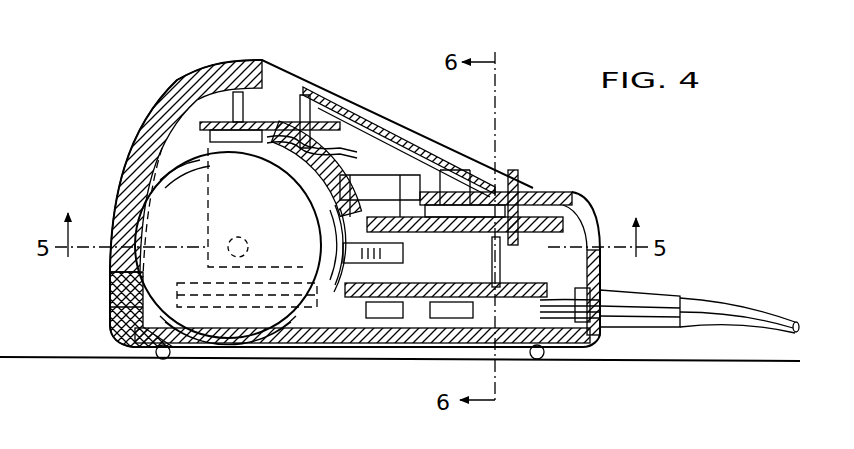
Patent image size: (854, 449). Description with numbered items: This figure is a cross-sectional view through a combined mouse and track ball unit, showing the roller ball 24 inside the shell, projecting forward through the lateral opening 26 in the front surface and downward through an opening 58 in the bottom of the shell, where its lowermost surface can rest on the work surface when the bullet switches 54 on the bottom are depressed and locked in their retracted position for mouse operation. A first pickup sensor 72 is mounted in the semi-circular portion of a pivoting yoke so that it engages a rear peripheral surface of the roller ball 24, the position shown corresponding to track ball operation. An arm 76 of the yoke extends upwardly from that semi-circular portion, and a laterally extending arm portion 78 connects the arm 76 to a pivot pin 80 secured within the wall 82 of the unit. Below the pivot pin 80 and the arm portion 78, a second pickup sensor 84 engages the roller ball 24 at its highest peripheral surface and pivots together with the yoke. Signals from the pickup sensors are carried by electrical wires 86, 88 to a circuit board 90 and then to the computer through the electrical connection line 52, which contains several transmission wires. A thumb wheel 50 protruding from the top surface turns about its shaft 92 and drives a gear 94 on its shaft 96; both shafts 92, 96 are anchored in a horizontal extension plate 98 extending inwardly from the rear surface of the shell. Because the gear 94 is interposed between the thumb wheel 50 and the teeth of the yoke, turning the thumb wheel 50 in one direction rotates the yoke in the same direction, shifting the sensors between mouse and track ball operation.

The roller ball 24 is at (269, 208).
The lateral opening 26 is at (110, 263).
The thumb wheel 50 is at (573, 200).
The electrical connection line 52 is at (750, 313).
The bullet switches 54 is at (147, 354).
The opening 58 is at (302, 345).
The first pickup sensor 72 is at (364, 300).
The arm 76 is at (387, 195).
The laterally extending arm portion 78 is at (296, 105).
The pivot pin 80 is at (200, 100).
The wall 82 is at (258, 93).
The second pickup sensor 84 is at (215, 142).
The electrical wires 86 is at (405, 258).
The electrical wires 88 is at (363, 160).
The circuit board 90 is at (420, 310).
The shaft 92 is at (513, 187).
The gear 94 is at (377, 175).
The shaft 96 is at (437, 170).
The horizontal extension plate 98 is at (582, 228).